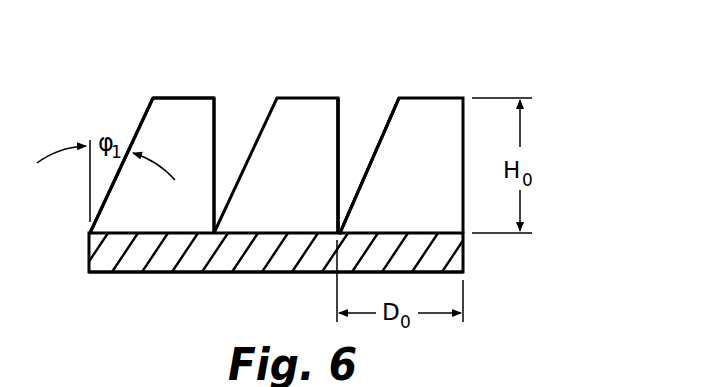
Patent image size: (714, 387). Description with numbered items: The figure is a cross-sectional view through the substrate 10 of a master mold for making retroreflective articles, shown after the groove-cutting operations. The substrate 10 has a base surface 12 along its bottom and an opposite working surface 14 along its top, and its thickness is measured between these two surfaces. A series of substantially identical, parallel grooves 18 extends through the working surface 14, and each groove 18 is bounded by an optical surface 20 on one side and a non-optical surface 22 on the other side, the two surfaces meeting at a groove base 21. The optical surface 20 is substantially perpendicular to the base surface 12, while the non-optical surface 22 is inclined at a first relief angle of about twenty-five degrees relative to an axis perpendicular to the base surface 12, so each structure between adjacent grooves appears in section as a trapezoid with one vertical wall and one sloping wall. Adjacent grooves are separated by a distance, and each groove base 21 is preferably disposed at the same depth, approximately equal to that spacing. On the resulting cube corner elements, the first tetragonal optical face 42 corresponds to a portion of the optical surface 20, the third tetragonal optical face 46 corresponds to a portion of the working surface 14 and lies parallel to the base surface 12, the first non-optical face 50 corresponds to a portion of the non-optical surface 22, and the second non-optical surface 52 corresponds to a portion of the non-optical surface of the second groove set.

The substrate 10 is at (455, 250).
The base surface 12 is at (278, 275).
The working surface 14 is at (449, 95).
The groove 18 is at (363, 115).
The optical surface 20 is at (340, 112).
The groove base 21 is at (342, 222).
The non-optical surface 22 is at (393, 110).
The first tetragonal optical face 42 is at (216, 112).
The third tetragonal optical face 46 is at (180, 97).
The first non-optical face 50 is at (142, 112).
The second non-optical surface 52 is at (152, 165).